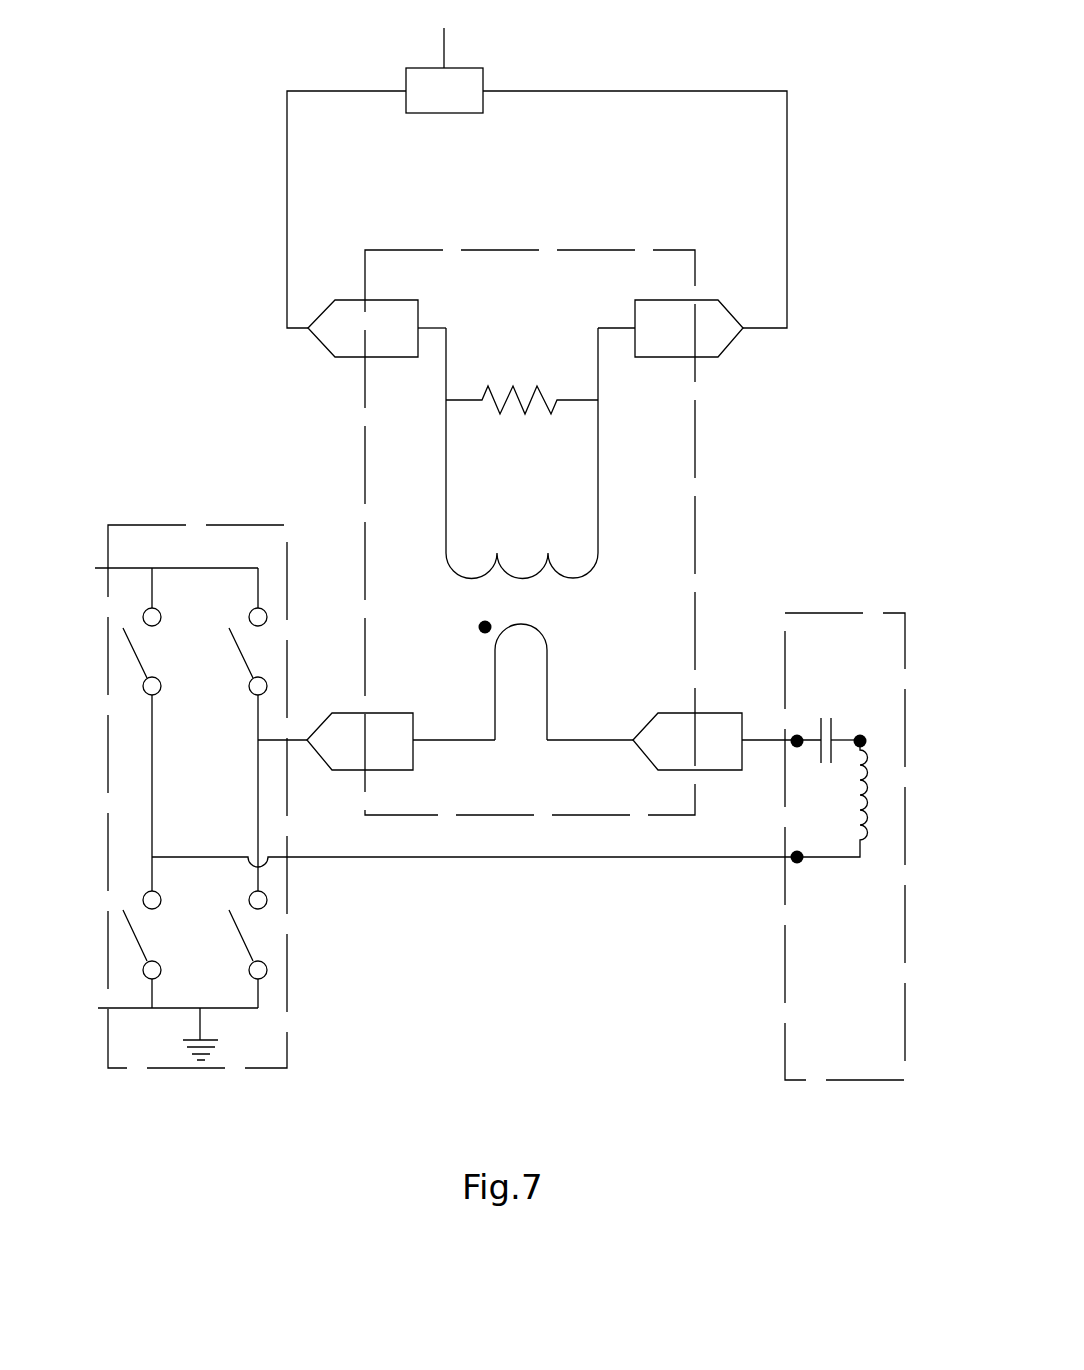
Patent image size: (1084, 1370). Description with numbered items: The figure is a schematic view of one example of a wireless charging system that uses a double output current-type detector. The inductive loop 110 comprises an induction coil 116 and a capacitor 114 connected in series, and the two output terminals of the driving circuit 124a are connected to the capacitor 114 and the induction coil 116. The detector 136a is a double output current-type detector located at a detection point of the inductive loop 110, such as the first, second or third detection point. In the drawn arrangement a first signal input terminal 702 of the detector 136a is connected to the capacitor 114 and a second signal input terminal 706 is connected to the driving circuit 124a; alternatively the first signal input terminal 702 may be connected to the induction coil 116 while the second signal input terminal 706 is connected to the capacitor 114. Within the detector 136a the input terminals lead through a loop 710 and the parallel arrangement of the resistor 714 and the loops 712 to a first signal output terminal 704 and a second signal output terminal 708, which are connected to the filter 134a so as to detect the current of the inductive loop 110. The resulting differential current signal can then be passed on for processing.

The filter 134a is at (537, 178).
The detector 136a is at (457, 250).
The second signal output terminal 708 is at (418, 355).
The first signal output terminal 704 is at (717, 355).
The inductor 712 is at (500, 563).
The resistor 714 is at (517, 392).
The second signal input terminal 706 is at (413, 713).
The inductor 710 is at (547, 693).
The first signal input terminal 702 is at (742, 713).
The driving circuit 124a is at (200, 530).
The inductive loop 110 is at (867, 617).
The capacitor 114 is at (832, 738).
The induction coil 116 is at (863, 845).